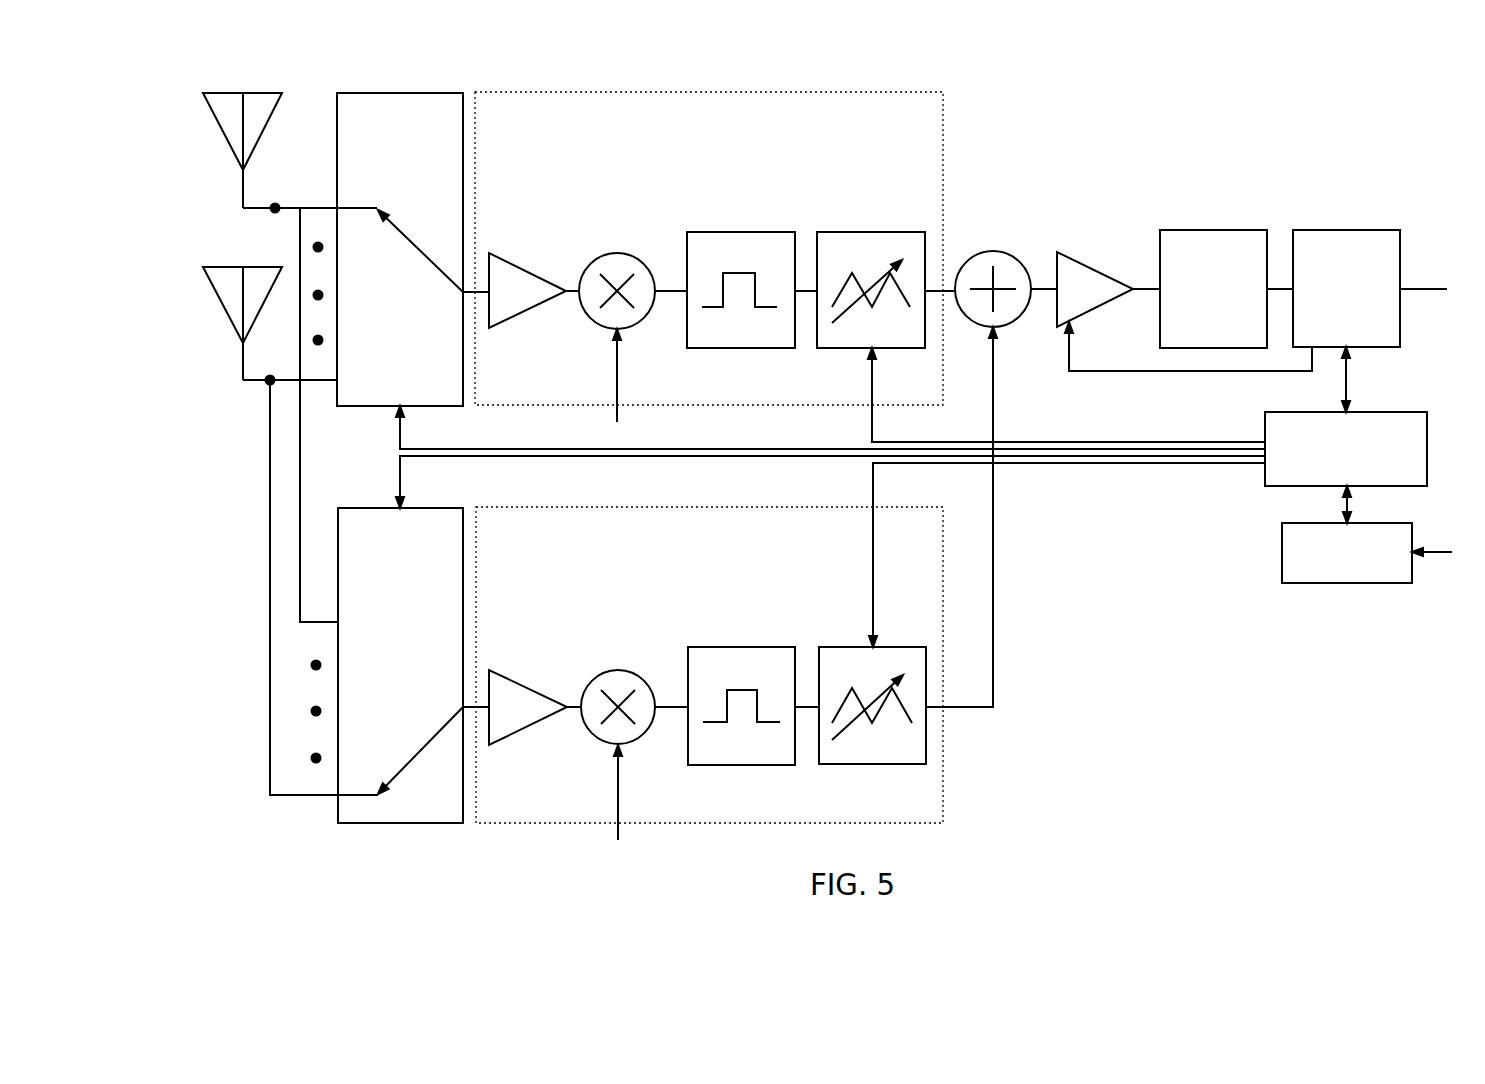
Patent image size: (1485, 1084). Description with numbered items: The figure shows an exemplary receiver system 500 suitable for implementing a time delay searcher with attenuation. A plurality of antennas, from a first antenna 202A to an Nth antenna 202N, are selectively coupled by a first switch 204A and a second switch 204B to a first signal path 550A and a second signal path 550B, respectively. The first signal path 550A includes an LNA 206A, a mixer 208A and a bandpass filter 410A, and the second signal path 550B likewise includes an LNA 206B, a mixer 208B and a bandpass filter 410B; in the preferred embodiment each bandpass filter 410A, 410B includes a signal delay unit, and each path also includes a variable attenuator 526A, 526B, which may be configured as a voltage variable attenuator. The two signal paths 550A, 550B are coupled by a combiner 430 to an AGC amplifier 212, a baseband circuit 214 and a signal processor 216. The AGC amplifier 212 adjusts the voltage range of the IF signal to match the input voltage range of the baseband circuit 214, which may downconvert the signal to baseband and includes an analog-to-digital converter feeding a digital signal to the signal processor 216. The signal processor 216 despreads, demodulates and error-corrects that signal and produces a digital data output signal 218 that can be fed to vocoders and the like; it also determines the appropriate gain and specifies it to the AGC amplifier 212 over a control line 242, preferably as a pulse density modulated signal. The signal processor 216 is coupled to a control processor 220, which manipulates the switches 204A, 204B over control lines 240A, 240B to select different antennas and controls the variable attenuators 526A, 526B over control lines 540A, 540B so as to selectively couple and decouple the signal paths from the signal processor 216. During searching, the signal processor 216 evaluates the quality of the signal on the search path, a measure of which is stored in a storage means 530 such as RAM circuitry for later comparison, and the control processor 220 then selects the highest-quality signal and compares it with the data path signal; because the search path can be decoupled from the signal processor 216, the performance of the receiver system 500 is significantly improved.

The antenna 202A is at (232, 92).
The antenna 202N is at (232, 267).
The switch 204A is at (400, 93).
The switch 204B is at (430, 507).
The LNA 206A is at (530, 272).
The LNA 206B is at (532, 688).
The mixer 208A is at (618, 252).
The mixer 208B is at (619, 669).
The bandpass filter 410A is at (742, 232).
The bandpass filter 410B is at (716, 647).
The variable attenuator 526A is at (870, 232).
The variable attenuator 526B is at (838, 647).
The combiner 430 is at (993, 251).
The AGC amplifier 212 is at (1093, 270).
The control line 242 is at (1102, 371).
The baseband circuit 214 is at (1213, 230).
The signal processor 216 is at (1346, 230).
The output signal 218 is at (1421, 289).
The control processor 220 is at (1407, 412).
The storage means 530 is at (1312, 584).
The control line 540A is at (872, 408).
The control line 540B is at (873, 518).
The control line 240A is at (400, 449).
The control line 240B is at (720, 458).
The signal path 550A is at (610, 137).
The signal path 550B is at (612, 554).
The receiver system 500 is at (1140, 552).